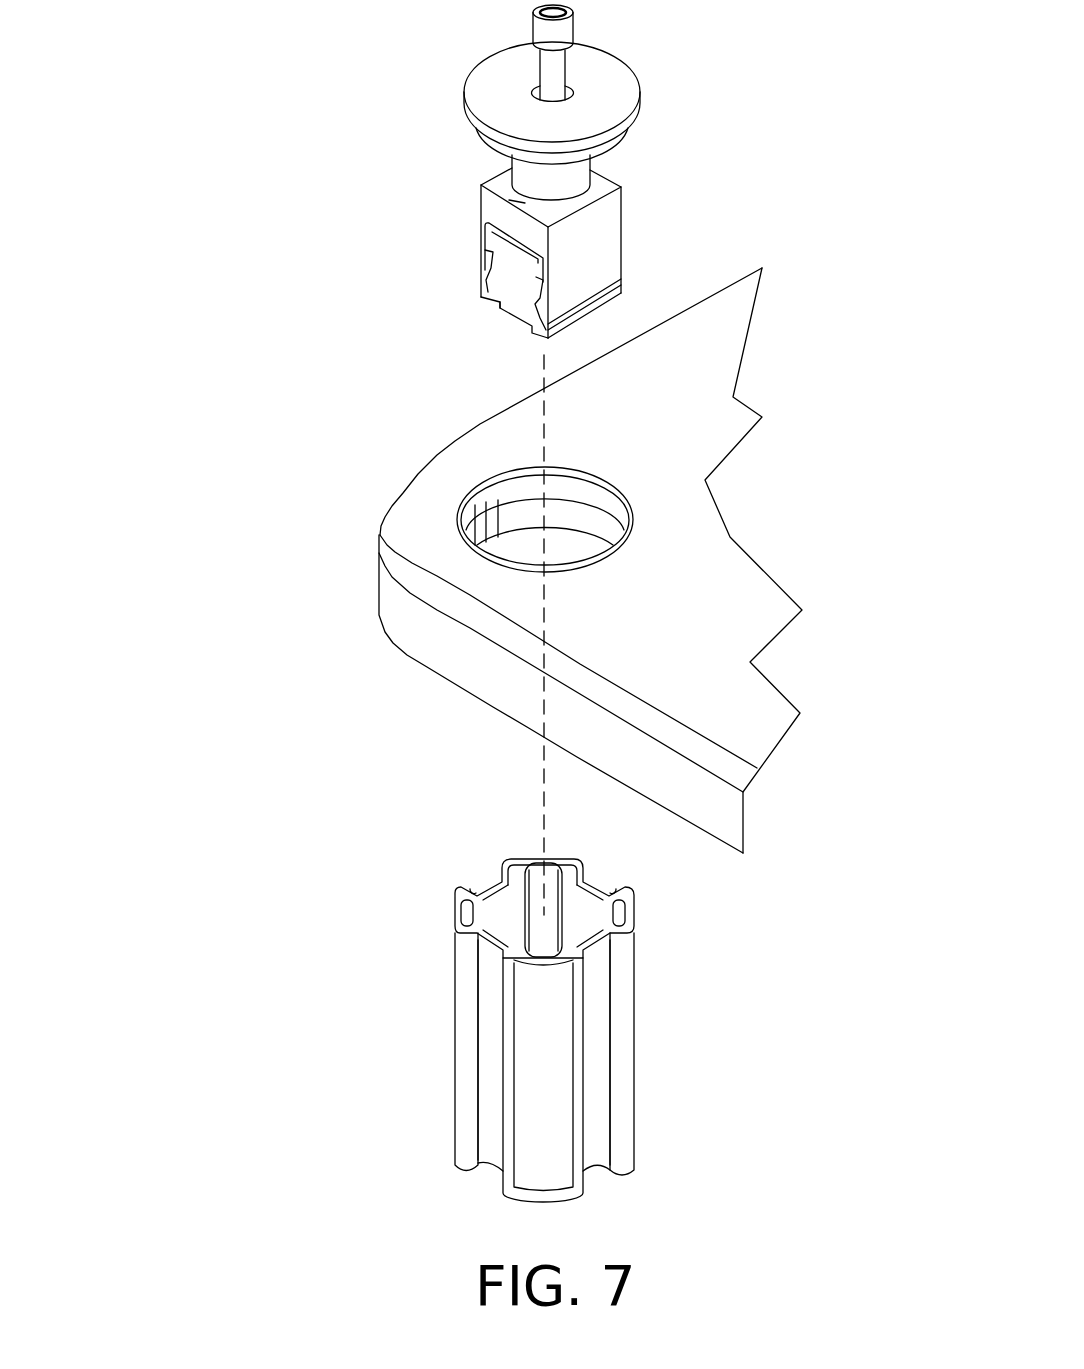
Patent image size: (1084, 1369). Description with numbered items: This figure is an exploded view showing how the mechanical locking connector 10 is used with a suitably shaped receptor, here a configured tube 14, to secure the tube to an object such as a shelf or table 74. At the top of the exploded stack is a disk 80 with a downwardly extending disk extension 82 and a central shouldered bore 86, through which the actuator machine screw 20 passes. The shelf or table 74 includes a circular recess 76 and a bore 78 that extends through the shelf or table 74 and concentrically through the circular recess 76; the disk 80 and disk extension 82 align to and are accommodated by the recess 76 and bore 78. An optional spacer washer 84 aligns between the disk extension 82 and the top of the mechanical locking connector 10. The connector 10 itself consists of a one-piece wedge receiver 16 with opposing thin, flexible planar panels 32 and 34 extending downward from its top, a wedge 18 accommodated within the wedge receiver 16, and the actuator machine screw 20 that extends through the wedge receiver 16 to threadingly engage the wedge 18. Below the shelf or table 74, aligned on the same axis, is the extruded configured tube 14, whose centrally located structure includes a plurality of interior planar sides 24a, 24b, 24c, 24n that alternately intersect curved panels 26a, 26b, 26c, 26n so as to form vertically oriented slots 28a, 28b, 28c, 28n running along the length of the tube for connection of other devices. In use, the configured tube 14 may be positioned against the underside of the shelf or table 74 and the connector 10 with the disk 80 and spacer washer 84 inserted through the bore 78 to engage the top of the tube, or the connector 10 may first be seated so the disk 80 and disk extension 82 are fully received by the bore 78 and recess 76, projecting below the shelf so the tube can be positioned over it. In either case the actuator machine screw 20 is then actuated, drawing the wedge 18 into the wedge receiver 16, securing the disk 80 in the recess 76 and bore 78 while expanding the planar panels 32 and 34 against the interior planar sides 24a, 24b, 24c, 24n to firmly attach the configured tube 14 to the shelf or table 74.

The mechanical locking connector 10 is at (477, 222).
The configured tube 14 is at (453, 1140).
The wedge receiver 16 is at (623, 230).
The wedge 18 is at (523, 313).
The actuator machine screw 20 is at (555, 62).
The interior planar side 24a is at (503, 898).
The interior planar side 24b is at (575, 897).
The interior planar side 24c is at (608, 928).
The interior planar side 24n is at (490, 922).
The curved panel 26a is at (548, 856).
The curved panel 26b is at (633, 903).
The curved panel 26c is at (545, 970).
The curved panel 26n is at (455, 942).
The slot 28a is at (493, 872).
The slot 28b is at (598, 887).
The slot 28c is at (593, 962).
The slot 28n is at (482, 982).
The planar panel 32 is at (580, 327).
The planar panel 34 is at (480, 248).
The shelf or table 74 is at (412, 520).
The recess 76 is at (460, 505).
The bore 78 is at (553, 538).
The disk 80 is at (623, 92).
The disk extension 82 is at (610, 147).
The spacer washer 84 is at (527, 173).
The shouldered bore 86 is at (533, 87).